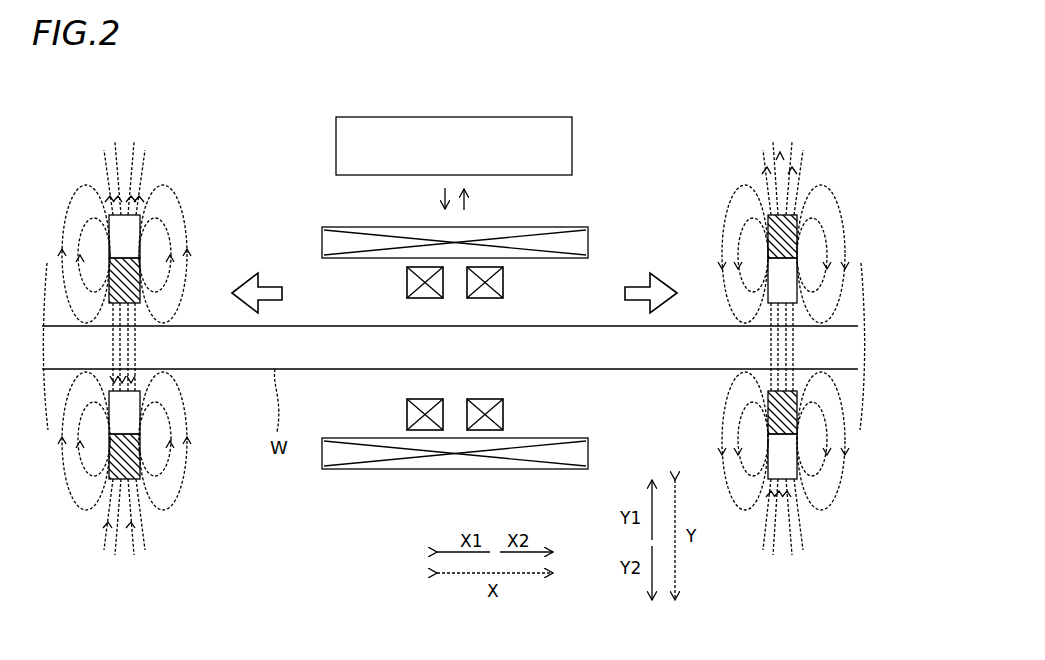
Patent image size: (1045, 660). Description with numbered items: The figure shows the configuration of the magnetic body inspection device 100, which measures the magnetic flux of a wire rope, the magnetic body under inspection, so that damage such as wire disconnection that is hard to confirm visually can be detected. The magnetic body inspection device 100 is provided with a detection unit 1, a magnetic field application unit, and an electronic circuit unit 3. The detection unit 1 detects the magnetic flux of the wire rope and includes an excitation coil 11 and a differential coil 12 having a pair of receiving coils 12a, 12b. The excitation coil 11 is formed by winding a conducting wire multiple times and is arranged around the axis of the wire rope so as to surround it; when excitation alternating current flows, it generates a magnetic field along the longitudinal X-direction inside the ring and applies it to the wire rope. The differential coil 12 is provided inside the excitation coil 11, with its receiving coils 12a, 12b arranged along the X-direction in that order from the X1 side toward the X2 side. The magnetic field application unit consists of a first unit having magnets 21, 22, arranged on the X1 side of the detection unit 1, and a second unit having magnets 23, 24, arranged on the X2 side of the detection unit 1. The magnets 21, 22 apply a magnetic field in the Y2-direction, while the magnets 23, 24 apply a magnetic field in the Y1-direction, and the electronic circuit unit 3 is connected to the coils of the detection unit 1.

The detection unit 1 is at (610, 430).
The electronic circuit unit 3 is at (553, 117).
The excitation coil 11 is at (588, 242).
The differential coil 12 is at (515, 390).
The receiving coil 12a is at (407, 282).
The receiving coil 12b is at (503, 283).
The magnet 21 is at (140, 250).
The magnet 22 is at (140, 455).
The magnet 23 is at (797, 248).
The magnet 24 is at (797, 452).
The magnetic body inspection device 100 is at (690, 116).